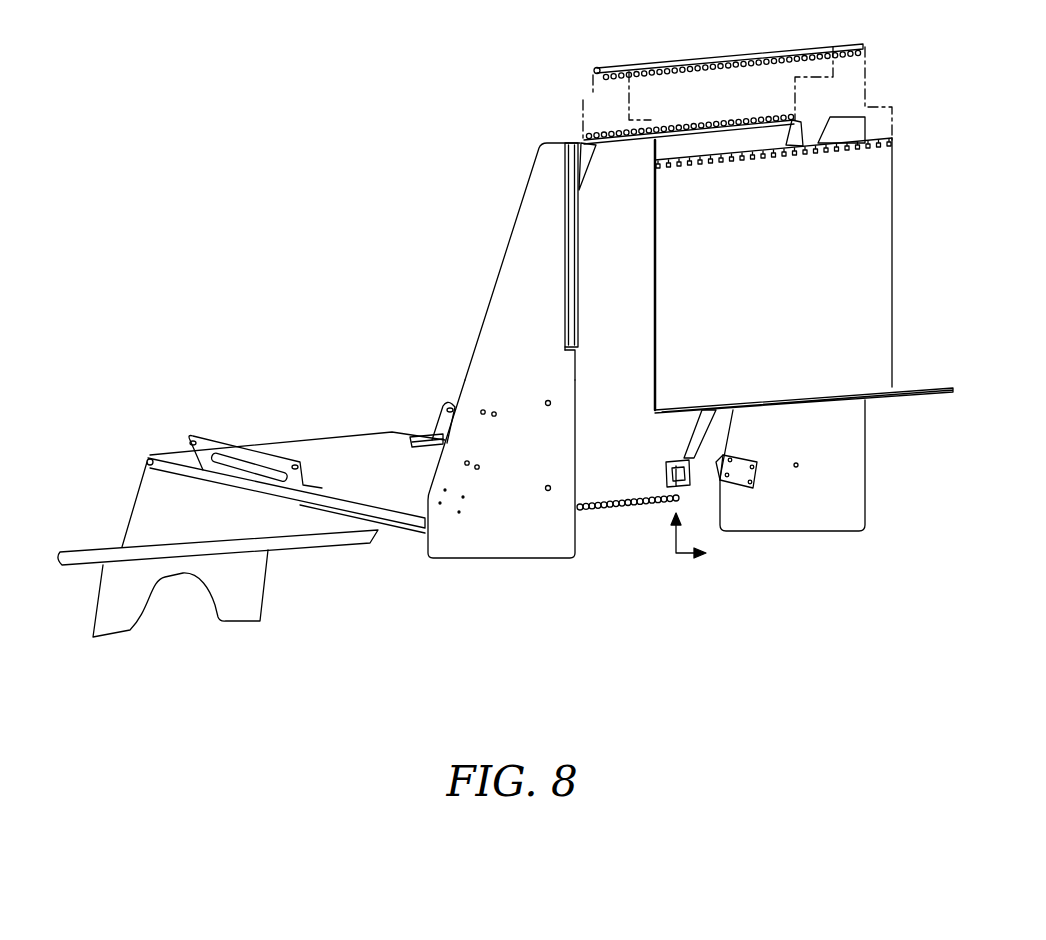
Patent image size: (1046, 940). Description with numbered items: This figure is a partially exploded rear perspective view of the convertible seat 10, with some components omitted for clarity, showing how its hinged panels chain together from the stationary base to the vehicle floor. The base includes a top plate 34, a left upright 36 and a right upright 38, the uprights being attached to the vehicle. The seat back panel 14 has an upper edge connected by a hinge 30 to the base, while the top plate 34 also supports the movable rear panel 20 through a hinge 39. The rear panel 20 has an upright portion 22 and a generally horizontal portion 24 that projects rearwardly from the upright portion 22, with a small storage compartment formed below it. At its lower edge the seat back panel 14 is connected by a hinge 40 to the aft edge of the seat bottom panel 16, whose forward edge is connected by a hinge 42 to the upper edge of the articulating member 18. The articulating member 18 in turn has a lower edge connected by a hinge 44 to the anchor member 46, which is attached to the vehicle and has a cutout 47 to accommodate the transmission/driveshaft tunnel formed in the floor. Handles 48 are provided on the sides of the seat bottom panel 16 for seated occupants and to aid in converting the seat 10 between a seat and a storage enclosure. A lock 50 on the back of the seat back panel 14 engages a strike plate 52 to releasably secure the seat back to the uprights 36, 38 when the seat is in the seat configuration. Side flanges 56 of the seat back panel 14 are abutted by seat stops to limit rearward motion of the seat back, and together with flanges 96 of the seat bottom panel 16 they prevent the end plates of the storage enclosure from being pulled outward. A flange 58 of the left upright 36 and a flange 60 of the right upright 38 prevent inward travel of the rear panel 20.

The seat 10 is at (311, 93).
The seat back panel 14 is at (600, 330).
The seat bottom panel 16 is at (377, 480).
The articulating member 18 is at (167, 518).
The rear panel 20 is at (770, 281).
The upright portion 22 is at (878, 223).
The horizontal portion 24 is at (932, 387).
The hinge 30 is at (591, 86).
The top plate 34 is at (732, 62).
The left upright 36 is at (492, 540).
The right upright 38 is at (814, 511).
The hinge 39 is at (636, 101).
The hinge 40 is at (633, 508).
The hinge 42 is at (298, 440).
The hinge 44 is at (94, 547).
The anchor member 46 is at (227, 600).
The cutout 47 is at (181, 627).
The handles 48 is at (293, 458).
The lock 50 is at (676, 460).
The strike plate 52 is at (752, 478).
The side flanges 56 is at (581, 154).
The flange 58 is at (573, 245).
The flange 60 is at (866, 128).
The flanges 96 is at (398, 523).